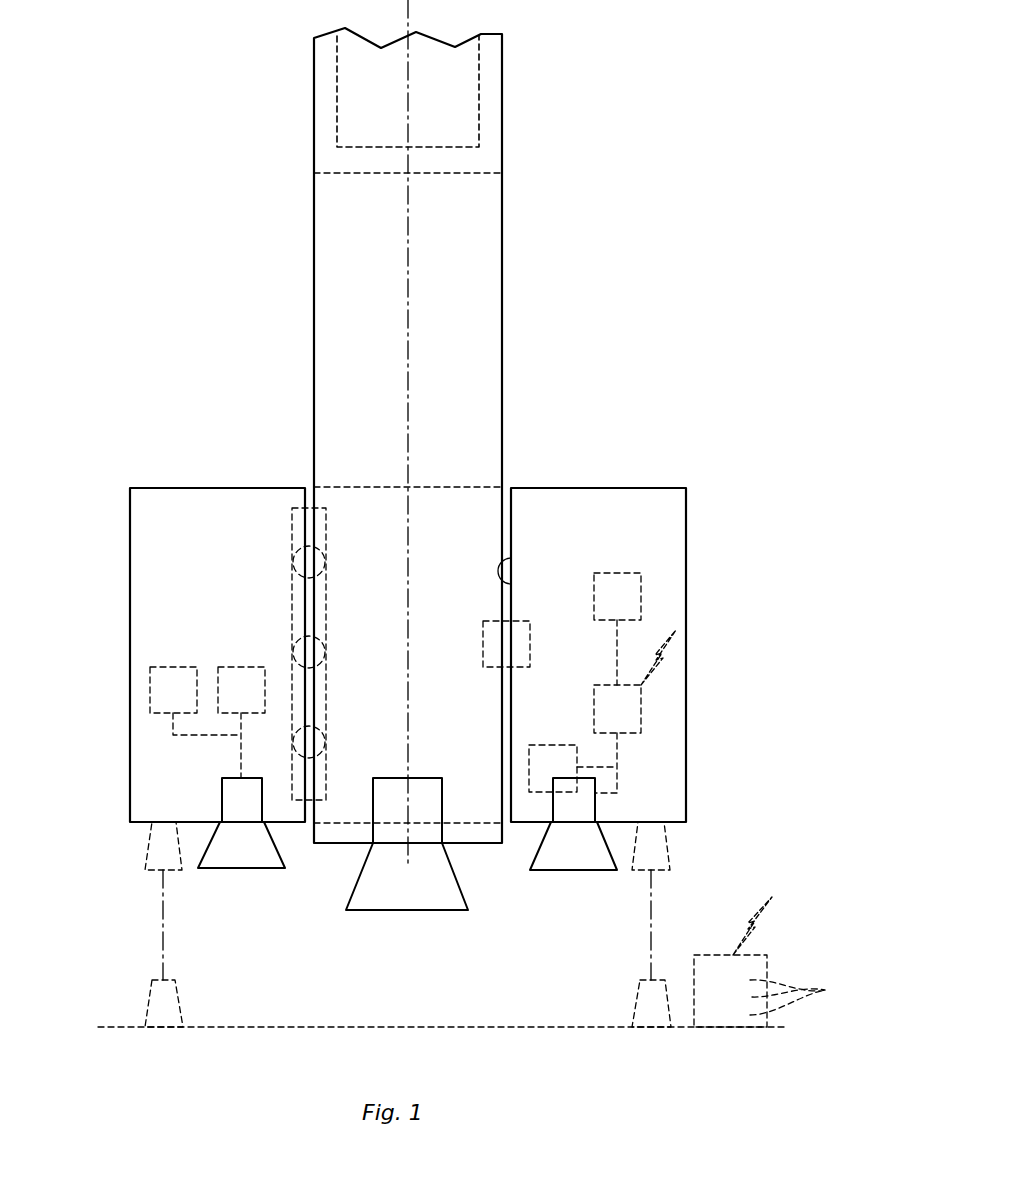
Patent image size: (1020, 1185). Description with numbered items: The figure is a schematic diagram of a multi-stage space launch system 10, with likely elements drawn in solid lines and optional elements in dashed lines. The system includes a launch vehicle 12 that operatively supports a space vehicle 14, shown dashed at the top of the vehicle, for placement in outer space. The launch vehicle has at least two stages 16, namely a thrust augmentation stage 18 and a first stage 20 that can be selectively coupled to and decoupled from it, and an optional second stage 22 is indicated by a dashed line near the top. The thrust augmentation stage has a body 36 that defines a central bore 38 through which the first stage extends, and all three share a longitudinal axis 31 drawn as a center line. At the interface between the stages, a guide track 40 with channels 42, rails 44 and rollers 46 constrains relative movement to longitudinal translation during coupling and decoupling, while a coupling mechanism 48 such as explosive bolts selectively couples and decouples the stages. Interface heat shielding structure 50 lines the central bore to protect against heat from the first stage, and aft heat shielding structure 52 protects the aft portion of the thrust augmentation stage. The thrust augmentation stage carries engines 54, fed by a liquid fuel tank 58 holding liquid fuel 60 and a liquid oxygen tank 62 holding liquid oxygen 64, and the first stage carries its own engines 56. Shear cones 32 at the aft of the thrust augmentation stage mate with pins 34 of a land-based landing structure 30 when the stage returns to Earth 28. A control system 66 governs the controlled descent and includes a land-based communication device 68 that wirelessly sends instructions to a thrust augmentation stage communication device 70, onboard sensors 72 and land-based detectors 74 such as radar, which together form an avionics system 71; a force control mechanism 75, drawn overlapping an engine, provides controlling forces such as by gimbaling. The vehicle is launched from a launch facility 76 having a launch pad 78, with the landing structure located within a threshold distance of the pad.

The multi-stage space launch system 10 is at (707, 58).
The launch vehicle 12 is at (658, 240).
The space vehicle 14 is at (479, 122).
The stages 16 is at (618, 296).
The thrust augmentation stage 18 is at (598, 447).
The first stage 20 is at (505, 372).
The second stage 22 is at (460, 173).
The Earth 28 is at (357, 1023).
The landing structure 30 is at (133, 997).
The longitudinal axis 31 is at (408, 357).
The shear cones 32 is at (145, 845).
The pins 34 is at (183, 1010).
The body 36 is at (689, 515).
The central bore 38 is at (509, 525).
The guide track 40 is at (292, 528).
The channels 42 is at (312, 603).
The rails 44 is at (310, 702).
The rollers 46 is at (326, 548).
The coupling mechanism 48 is at (530, 650).
The interface heat shielding structure 50 is at (510, 558).
The aft heat shielding structure 52 is at (290, 822).
The engines 54 is at (241, 870).
The engines 56 is at (416, 910).
The liquid fuel tank 58 is at (232, 667).
The liquid fuel 60 is at (258, 700).
The liquid oxygen tank 62 is at (165, 667).
The liquid oxygen 64 is at (152, 700).
The control system 66 is at (770, 968).
The land-based communication device 68 is at (713, 968).
The thrust augmentation stage communication device 70 is at (641, 718).
The avionics system 71 is at (765, 766).
The sensors 72 is at (627, 573).
The detectors 74 is at (800, 990).
The force control mechanism 75 is at (540, 745).
The launch facility 76 is at (85, 997).
The launch pad 78 is at (485, 1025).